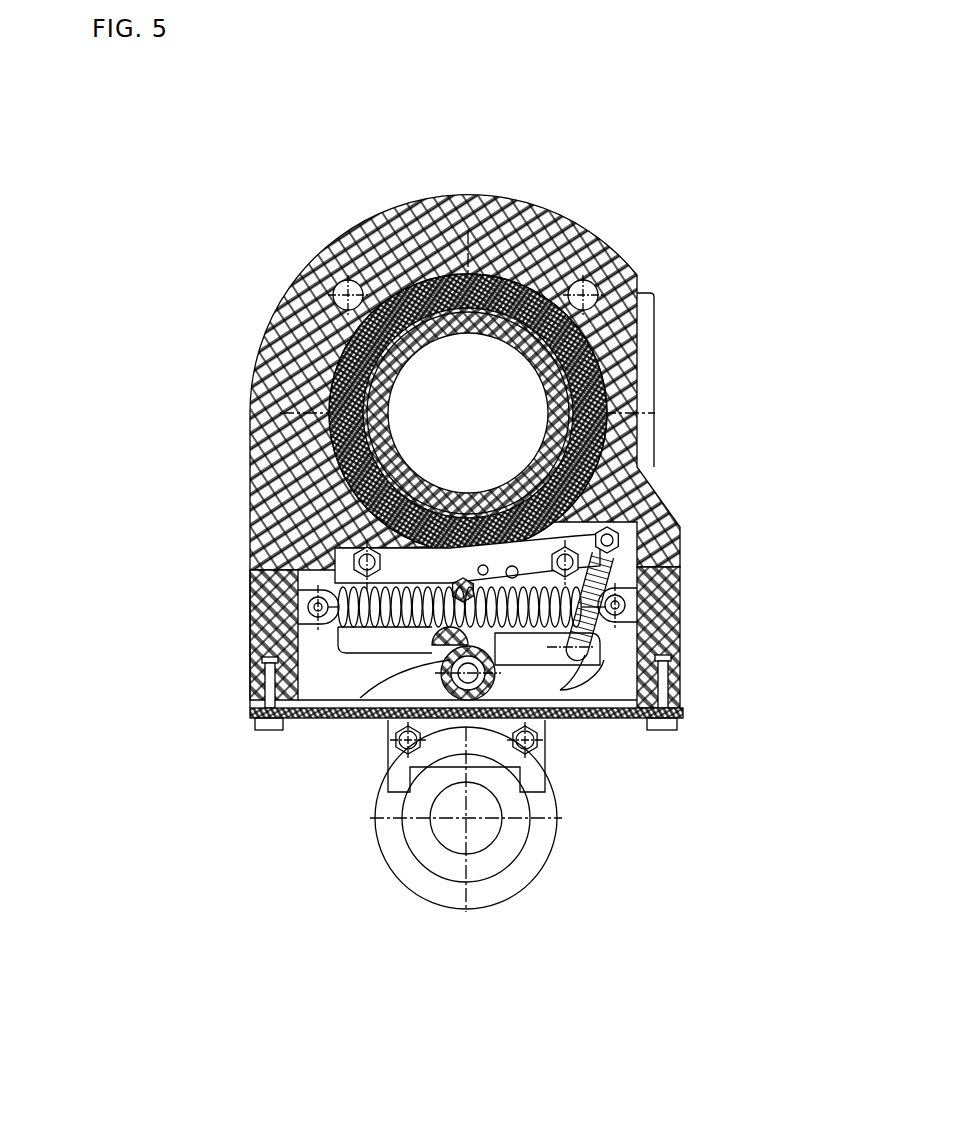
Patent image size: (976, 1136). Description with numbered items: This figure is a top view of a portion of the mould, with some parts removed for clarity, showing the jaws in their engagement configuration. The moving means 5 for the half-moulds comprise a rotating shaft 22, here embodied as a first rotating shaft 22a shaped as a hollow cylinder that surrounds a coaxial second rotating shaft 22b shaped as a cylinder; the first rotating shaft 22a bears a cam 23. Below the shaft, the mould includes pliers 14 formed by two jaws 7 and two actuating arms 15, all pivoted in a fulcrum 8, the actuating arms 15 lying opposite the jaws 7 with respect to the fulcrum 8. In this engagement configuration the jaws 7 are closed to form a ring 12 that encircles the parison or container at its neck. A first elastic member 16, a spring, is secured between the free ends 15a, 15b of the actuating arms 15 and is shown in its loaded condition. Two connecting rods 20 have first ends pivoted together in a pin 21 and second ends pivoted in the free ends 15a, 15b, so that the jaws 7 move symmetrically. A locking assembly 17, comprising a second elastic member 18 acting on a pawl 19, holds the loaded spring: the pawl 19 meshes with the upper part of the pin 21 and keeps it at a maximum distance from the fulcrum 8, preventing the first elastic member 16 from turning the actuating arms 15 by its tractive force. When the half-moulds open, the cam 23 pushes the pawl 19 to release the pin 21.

The moving means 5 is at (510, 252).
The rotating shaft 22 is at (368, 357).
The first rotating shaft 22a is at (517, 318).
The second rotating shaft 22b is at (500, 383).
The cam 23 is at (458, 577).
The connecting rods 20 is at (548, 530).
The pin 21 is at (458, 590).
The actuating arms 15 is at (562, 677).
The free end 15a is at (317, 605).
The free end 15b is at (627, 607).
The second elastic member 18 is at (595, 632).
The locking assembly 17 is at (605, 668).
The first elastic member 16 is at (303, 700).
The pawl 19 is at (533, 652).
The fulcrum 8 is at (370, 658).
The pliers 14 is at (365, 780).
The ring 12 is at (560, 843).
The jaws 7 is at (397, 863).